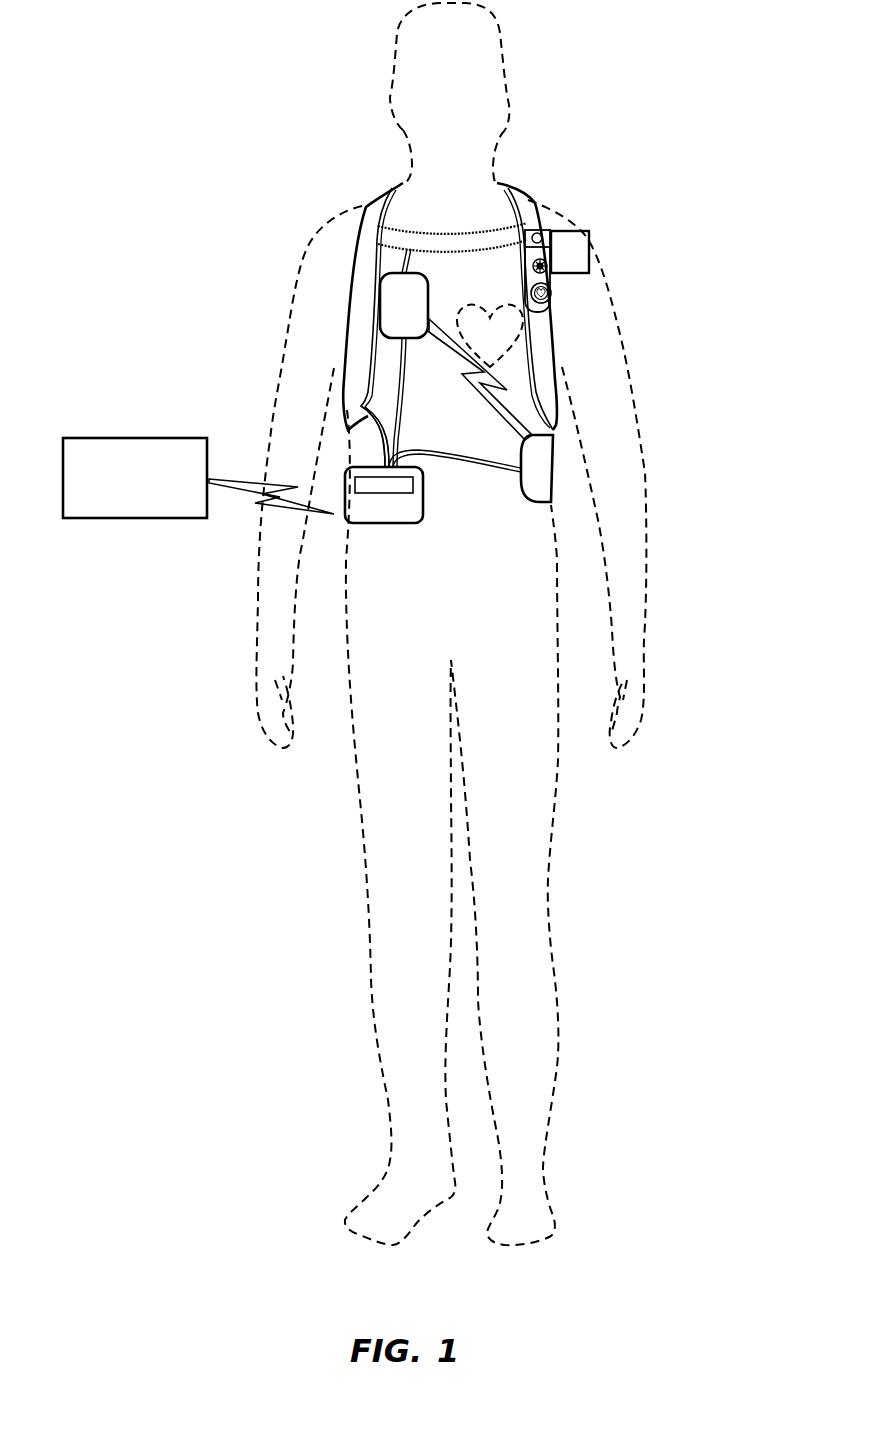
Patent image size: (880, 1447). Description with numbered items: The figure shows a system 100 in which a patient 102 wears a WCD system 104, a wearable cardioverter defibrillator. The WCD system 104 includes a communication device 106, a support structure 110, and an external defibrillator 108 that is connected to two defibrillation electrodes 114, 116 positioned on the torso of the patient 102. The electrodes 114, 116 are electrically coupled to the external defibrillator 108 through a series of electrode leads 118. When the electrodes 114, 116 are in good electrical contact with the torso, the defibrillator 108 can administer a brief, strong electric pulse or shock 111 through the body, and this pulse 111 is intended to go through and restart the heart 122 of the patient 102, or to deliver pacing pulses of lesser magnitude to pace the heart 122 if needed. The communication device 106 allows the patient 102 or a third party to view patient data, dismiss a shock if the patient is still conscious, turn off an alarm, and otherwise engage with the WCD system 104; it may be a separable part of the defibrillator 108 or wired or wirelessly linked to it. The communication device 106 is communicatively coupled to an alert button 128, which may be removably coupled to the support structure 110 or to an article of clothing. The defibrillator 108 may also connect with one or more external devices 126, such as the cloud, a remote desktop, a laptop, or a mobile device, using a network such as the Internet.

The system 100 is at (628, 92).
The patient 102 is at (397, 57).
The WCD system 104 is at (518, 296).
The communication device 106 is at (350, 473).
The external defibrillator 108 is at (345, 500).
The support structure 110 is at (595, 306).
The electrical shock 111 is at (558, 371).
The defibrillation electrode 114 is at (388, 303).
The defibrillation electrode 116 is at (547, 453).
The electrode leads 118 is at (398, 366).
The heart 122 is at (549, 307).
The external device 126 is at (137, 440).
The alert button 128 is at (550, 270).